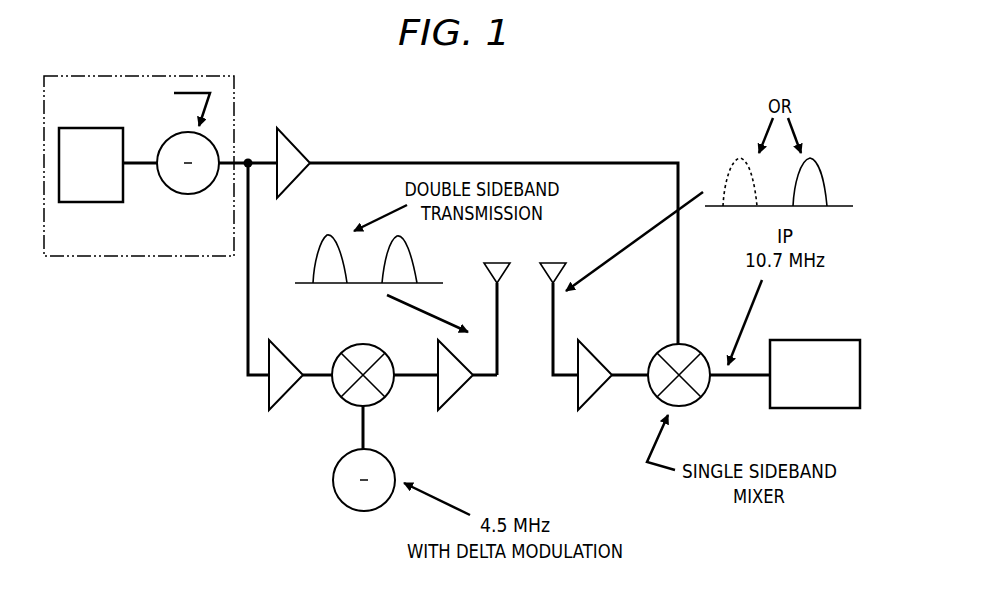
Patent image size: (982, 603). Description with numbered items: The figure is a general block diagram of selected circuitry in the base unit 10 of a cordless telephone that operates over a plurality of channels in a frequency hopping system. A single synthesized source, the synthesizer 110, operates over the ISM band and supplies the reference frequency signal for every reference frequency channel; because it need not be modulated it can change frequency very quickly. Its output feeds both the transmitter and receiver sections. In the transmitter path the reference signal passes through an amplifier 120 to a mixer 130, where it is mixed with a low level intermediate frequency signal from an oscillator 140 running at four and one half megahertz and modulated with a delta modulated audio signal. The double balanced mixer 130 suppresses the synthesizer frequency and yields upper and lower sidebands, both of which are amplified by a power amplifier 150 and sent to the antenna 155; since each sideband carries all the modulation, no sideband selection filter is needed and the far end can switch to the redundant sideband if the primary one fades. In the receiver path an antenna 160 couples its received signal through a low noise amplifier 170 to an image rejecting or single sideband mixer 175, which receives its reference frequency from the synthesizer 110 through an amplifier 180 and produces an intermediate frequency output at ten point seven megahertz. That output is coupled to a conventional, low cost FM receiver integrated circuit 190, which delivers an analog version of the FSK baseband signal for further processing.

The base unit 10 is at (456, 122).
The synthesizer 110 is at (102, 256).
The amplifier 120 is at (270, 385).
The mixer 130 is at (357, 343).
The oscillator 140 is at (352, 450).
The power amplifier 150 is at (457, 392).
The antenna 155 is at (502, 298).
The antenna 160 is at (555, 327).
The low noise amplifier 170 is at (600, 387).
The single sideband mixer 175 is at (690, 342).
The amplifier 180 is at (293, 140).
The FM receiver integrated circuit 190 is at (818, 340).